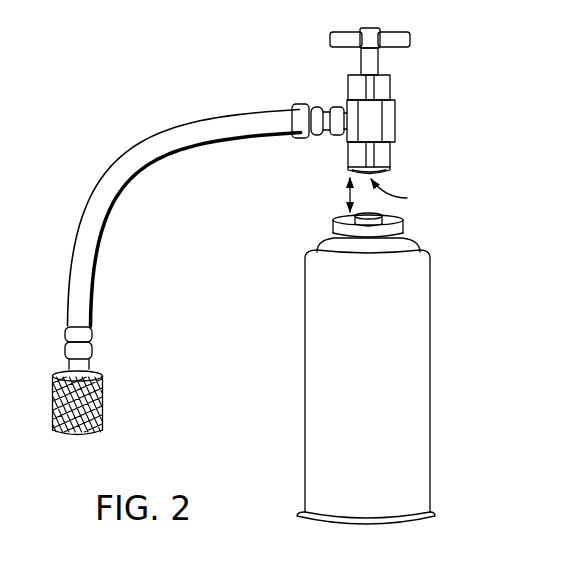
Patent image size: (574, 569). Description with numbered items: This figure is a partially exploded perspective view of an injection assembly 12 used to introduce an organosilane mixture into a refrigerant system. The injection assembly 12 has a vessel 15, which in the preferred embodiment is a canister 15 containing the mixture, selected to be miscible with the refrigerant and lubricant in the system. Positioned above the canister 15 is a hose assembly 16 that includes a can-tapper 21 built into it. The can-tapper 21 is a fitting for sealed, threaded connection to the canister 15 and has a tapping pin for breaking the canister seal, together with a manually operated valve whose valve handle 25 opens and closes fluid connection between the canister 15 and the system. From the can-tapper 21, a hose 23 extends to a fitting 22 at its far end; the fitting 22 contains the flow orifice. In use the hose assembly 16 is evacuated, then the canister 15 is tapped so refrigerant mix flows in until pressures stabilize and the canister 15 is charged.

The injection assembly 12 is at (463, 181).
The vessel 15 is at (430, 305).
The hose assembly 16 is at (92, 152).
The can-tapper 21 is at (392, 122).
The fitting 22 is at (113, 402).
The hose 23 is at (113, 210).
The valve handle 25 is at (386, 56).